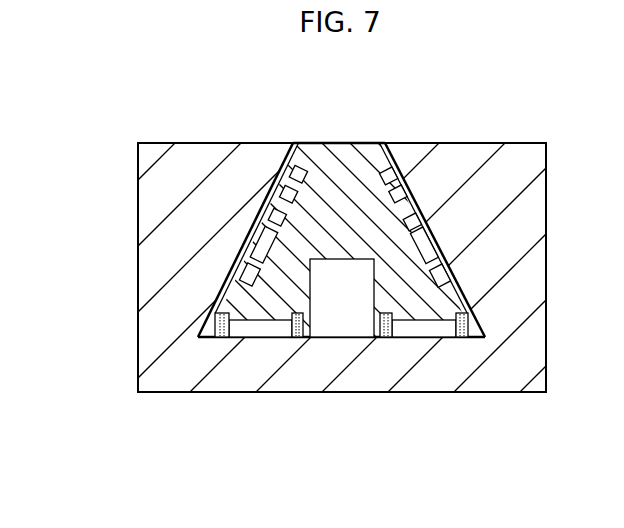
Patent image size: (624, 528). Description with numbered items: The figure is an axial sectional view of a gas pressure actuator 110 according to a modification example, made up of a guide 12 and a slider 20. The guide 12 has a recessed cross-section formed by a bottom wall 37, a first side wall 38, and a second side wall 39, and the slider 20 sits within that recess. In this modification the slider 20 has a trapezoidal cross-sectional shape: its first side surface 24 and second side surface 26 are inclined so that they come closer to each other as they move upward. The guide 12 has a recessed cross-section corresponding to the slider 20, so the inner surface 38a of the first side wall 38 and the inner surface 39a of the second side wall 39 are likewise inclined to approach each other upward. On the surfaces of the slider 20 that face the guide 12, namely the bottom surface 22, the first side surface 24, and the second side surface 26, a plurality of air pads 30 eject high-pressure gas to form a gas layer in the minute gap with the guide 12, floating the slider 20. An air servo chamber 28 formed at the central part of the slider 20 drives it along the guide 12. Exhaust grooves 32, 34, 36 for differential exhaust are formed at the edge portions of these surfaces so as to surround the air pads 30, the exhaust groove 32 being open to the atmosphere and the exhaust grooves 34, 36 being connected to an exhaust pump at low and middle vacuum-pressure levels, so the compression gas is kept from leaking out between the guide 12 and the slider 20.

The gas pressure actuator 110 is at (358, 510).
The guide 12 is at (511, 372).
The slider 20 is at (340, 143).
The bottom surface 22 is at (296, 340).
The first side surface 24 is at (488, 335).
The second side surface 26 is at (226, 291).
The air servo chamber 28 is at (384, 340).
The air pads 30 is at (256, 244).
The exhaust groove 32 is at (266, 217).
The exhaust groove 34 is at (277, 194).
The exhaust groove 36 is at (284, 170).
The bottom wall 37 is at (347, 340).
The first side wall 38 is at (495, 282).
The inner surface of the first side wall 38a is at (377, 143).
The second side wall 39 is at (165, 232).
The inner surface of the second side wall 39a is at (307, 143).